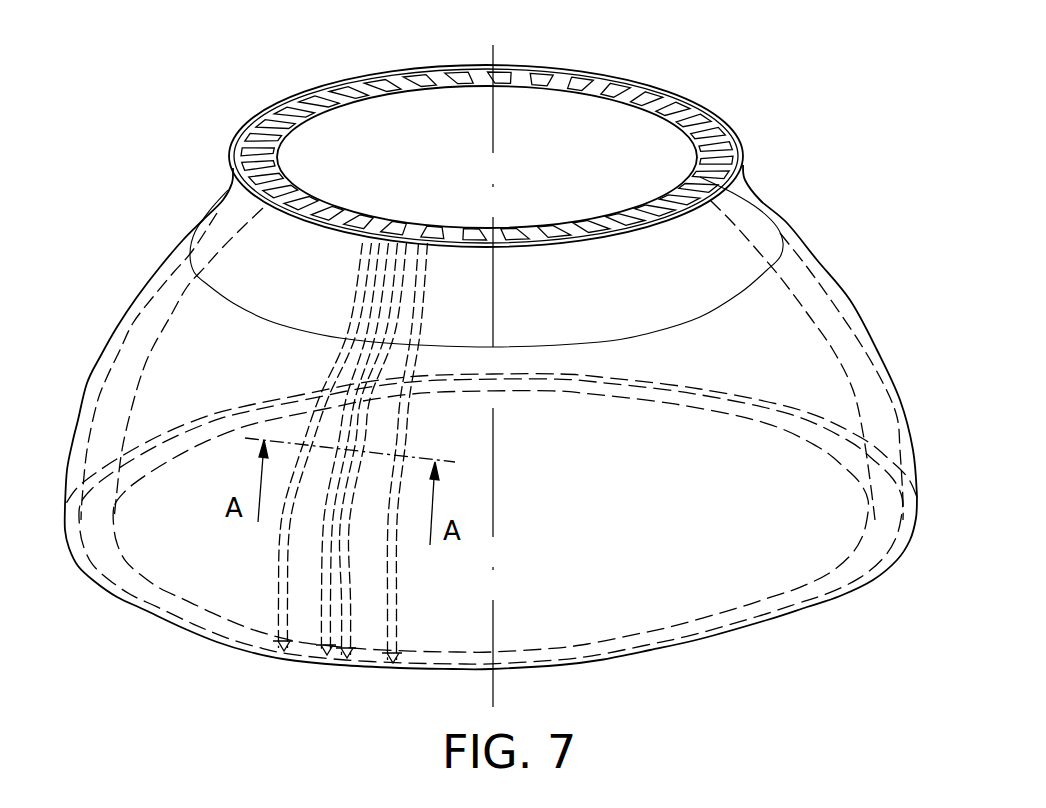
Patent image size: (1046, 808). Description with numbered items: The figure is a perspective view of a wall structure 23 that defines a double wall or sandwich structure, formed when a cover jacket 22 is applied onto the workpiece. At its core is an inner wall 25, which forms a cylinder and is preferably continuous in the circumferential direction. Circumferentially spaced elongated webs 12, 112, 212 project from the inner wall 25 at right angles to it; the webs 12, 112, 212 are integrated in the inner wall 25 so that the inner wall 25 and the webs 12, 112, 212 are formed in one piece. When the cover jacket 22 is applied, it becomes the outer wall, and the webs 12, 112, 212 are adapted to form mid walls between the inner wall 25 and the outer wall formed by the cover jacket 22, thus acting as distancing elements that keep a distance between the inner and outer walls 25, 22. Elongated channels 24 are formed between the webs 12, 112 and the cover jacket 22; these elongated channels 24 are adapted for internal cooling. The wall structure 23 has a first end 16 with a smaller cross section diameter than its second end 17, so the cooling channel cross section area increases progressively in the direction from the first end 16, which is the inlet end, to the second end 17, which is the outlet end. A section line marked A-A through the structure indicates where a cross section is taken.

The web 12 is at (380, 235).
The first end 16 is at (812, 119).
The second end 17 is at (804, 658).
The cover jacket 22 is at (743, 178).
The wall structure 23 is at (837, 213).
The elongated channel 24 is at (398, 235).
The inner wall 25 is at (660, 114).
The web 112 is at (413, 235).
The web 212 is at (453, 235).